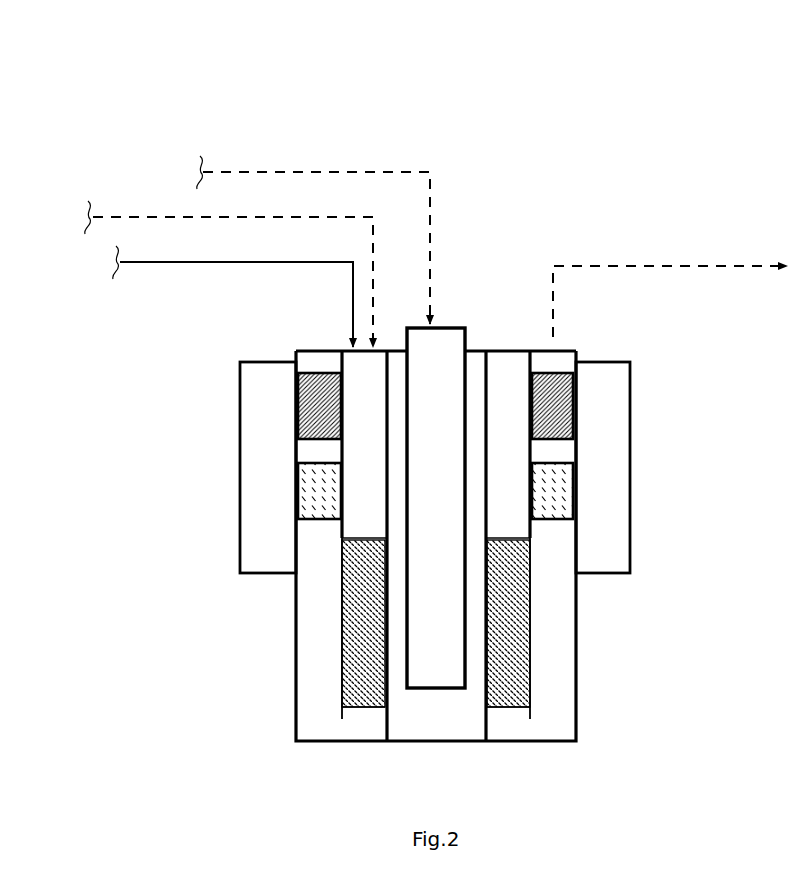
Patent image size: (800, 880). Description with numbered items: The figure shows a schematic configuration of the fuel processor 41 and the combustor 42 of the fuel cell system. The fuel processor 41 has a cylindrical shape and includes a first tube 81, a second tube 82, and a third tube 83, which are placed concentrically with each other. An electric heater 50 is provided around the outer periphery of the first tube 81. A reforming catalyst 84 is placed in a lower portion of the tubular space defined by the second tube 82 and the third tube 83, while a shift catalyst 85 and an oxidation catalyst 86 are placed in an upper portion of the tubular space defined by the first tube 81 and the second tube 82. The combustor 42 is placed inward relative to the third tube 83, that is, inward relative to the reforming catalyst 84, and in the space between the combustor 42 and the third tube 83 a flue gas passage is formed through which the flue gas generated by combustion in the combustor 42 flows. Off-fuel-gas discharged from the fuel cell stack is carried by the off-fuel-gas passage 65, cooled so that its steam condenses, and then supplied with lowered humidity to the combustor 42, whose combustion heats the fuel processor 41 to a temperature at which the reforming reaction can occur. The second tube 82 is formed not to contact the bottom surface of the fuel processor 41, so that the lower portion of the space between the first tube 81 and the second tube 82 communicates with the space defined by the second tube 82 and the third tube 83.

The fuel processor 41 is at (465, 46).
The combustor 42 is at (452, 327).
The electric heater 50 is at (633, 438).
The off-fuel-gas passage 65 is at (328, 170).
The first tube 81 is at (576, 703).
The second tube 82 is at (530, 640).
The third tube 83 is at (385, 730).
The reforming catalyst 84 is at (508, 607).
The shift catalyst 85 is at (318, 494).
The oxidation catalyst 86 is at (325, 410).